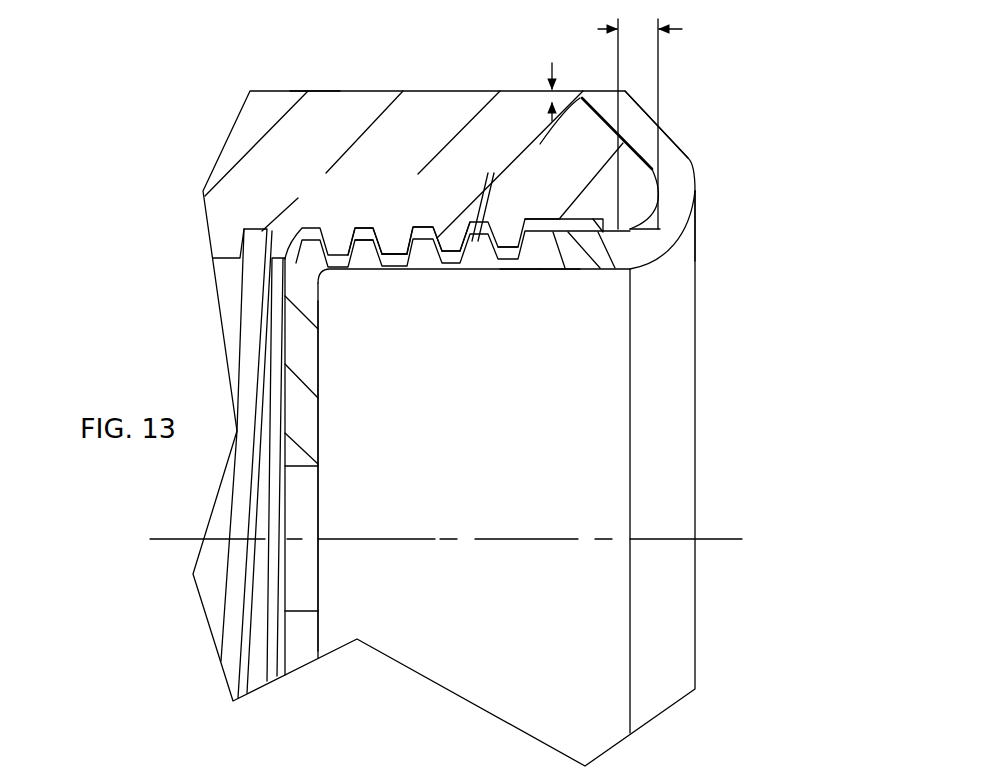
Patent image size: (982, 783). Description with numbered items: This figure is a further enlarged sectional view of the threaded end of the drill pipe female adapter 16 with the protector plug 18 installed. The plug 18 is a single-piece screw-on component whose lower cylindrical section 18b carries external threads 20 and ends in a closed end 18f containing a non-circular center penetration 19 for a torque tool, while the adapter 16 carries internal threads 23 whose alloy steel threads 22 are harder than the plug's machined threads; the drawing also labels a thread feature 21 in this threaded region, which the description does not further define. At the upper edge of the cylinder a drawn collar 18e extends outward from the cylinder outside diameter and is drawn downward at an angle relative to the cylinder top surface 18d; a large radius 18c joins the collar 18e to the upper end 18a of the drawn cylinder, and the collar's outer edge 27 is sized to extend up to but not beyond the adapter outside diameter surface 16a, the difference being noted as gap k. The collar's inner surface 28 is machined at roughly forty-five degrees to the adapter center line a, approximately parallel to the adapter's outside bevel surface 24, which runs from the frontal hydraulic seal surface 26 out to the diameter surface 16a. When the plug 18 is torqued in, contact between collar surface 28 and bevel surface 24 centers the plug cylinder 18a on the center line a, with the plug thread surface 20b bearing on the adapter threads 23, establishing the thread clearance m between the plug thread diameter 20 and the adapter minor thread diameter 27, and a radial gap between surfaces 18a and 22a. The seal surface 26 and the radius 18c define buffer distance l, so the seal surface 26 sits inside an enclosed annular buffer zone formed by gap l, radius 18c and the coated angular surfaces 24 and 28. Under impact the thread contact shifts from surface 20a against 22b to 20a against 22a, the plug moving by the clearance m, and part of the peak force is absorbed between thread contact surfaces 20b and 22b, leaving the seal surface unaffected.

The drill pipe female adapter 16 is at (279, 87).
The adapter diameter surface 16a is at (311, 88).
The protector plug 18 is at (586, 270).
The upper end of drawn cylinder 18a is at (556, 268).
The lower cylindrical section 18b is at (538, 268).
The large radius 18c is at (658, 212).
The cylinder top surface 18d is at (692, 183).
The drawn collar 18e is at (660, 98).
The lower closed end 18f is at (320, 373).
The center penetration 19 is at (322, 517).
The external threads 20 is at (372, 230).
The plug thread surface 20a is at (365, 245).
The plug thread surface 20b is at (395, 250).
The thread groove 21 is at (477, 258).
The adapter threads 22 is at (412, 228).
The adapter inner surface 22a is at (398, 252).
The adapter thread surface 22b is at (453, 238).
The internal threads 23 is at (500, 265).
The outside bevel surface 24 is at (541, 143).
The frontal hydraulic seal surface 26 is at (622, 165).
The outer edge of collar 27 is at (580, 97).
The inner surface of collar 28 is at (620, 140).
The adapter center line a is at (567, 535).
The gap k is at (547, 81).
The buffer zone distance l is at (646, 30).
The thread clearance m is at (500, 182).